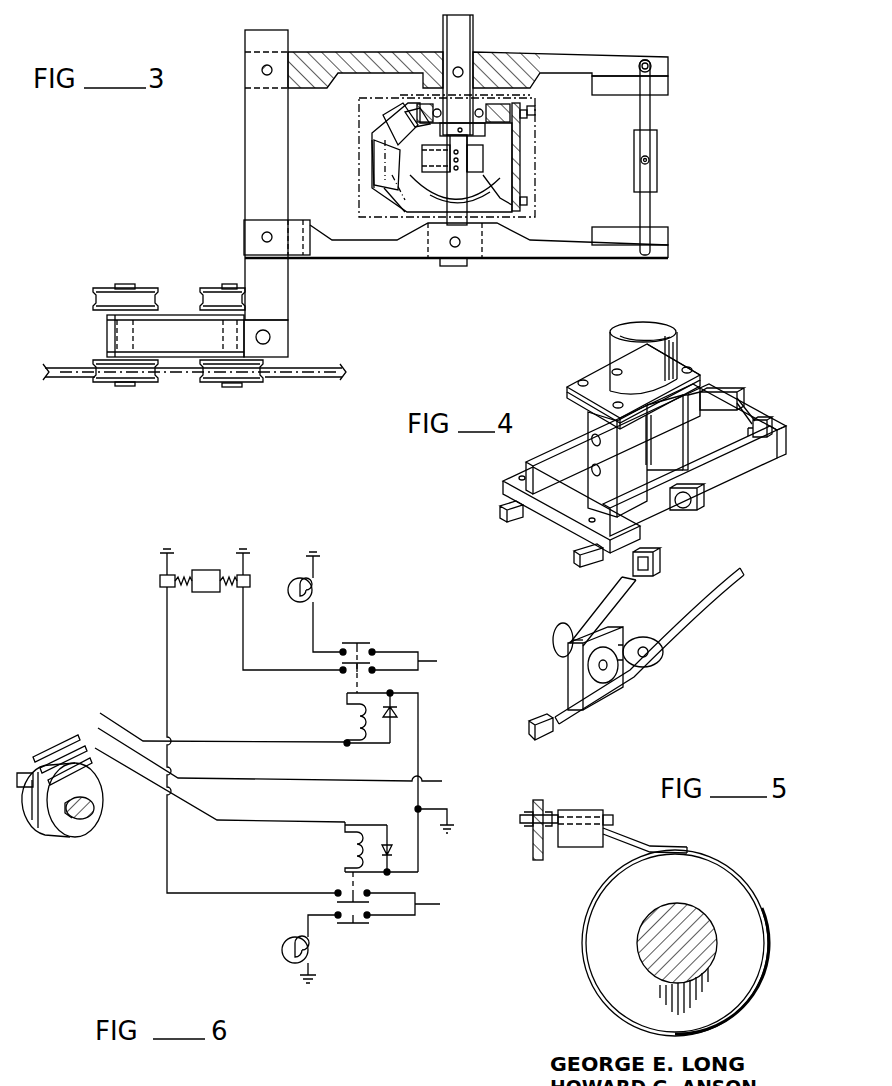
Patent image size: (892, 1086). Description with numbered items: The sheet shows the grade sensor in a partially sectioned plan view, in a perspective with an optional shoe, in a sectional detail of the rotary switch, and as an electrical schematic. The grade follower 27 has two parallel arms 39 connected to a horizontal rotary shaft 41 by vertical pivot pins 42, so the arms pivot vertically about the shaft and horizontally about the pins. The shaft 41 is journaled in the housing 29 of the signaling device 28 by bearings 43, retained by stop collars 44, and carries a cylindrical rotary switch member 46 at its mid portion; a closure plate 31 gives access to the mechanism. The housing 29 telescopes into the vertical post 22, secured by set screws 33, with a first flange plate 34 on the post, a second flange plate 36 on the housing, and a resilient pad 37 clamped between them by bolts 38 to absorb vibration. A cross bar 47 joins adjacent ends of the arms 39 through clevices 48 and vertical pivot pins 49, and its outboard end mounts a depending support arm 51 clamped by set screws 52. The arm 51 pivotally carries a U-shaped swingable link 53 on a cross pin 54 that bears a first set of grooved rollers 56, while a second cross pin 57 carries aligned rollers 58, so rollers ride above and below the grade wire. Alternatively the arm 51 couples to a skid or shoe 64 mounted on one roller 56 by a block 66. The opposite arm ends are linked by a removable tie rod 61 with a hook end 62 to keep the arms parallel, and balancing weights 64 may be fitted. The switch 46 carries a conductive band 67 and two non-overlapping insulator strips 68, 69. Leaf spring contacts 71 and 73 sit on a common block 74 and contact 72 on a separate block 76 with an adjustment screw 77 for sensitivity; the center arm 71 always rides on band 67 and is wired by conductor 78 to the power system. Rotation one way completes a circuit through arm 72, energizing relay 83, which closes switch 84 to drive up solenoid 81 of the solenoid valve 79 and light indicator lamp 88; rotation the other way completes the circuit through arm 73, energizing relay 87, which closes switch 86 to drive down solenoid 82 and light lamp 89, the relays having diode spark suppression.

In FIG. 4, the vertical post 22 is at (657, 332).
In FIG. 3, the grade follower 27 is at (349, 41).
In FIG. 4, the grade follower 27 is at (742, 488).
In FIG. 4, the signaling device 28 is at (697, 435).
In FIG. 3, the housing 29 is at (390, 113).
In FIG. 4, the housing 29 is at (681, 459).
In FIG. 3, the closure plate 31 is at (533, 113).
In FIG. 4, the closure plate 31 is at (683, 413).
In FIG. 4, the set screws 33 is at (613, 352).
In FIG. 4, the first flange plate 34 is at (603, 367).
In FIG. 4, the second flange plate 36 is at (568, 397).
In FIG. 4, the pad of resilient material 37 is at (700, 387).
In FIG. 4, the bolts 38 is at (613, 405).
In FIG. 3, the parallel arms 39 is at (577, 63).
In FIG. 4, the parallel arms 39 is at (565, 453).
In FIG. 3, the horizontal rotary shaft 41 is at (450, 53).
In FIG. 4, the horizontal rotary shaft 41 is at (693, 508).
In FIG. 5, the horizontal rotary shaft 41 is at (707, 925).
In FIG. 6, the horizontal rotary shaft 41 is at (96, 813).
In FIG. 3, the vertical pivot pins 42 is at (463, 68).
In FIG. 3, the bearings 43 is at (490, 98).
In FIG. 3, the stop collars 44 is at (472, 128).
In FIG. 3, the rotary switch member 46 is at (517, 143).
In FIG. 5, the rotary switch member 46 is at (762, 958).
In FIG. 3, the cross bar 47 is at (252, 188).
In FIG. 3, the clevices 48 is at (293, 227).
In FIG. 4, the clevices 48 is at (528, 472).
In FIG. 3, the vertical pivot pins 49 is at (267, 77).
In FIG. 4, the vertical pivot pins 49 is at (518, 477).
In FIG. 3, the depending support arm 51 is at (170, 315).
In FIG. 4, the depending support arm 51 is at (618, 593).
In FIG. 3, the set screws 52 is at (272, 330).
In FIG. 4, the set screws 52 is at (645, 548).
In FIG. 3, the swingable link 53 is at (192, 313).
In FIG. 3, the cross pin 54 is at (127, 284).
In FIG. 3, the first set of grooved rollers 56 is at (105, 288).
In FIG. 4, the first set of grooved rollers 56 is at (562, 628).
In FIG. 3, the second cross pin 57 is at (232, 387).
In FIG. 4, the second cross pin 57 is at (648, 650).
In FIG. 3, the second set of grooved rollers 58 is at (215, 288).
In FIG. 4, the second set of grooved rollers 58 is at (645, 633).
In FIG. 3, the tie rod 61 is at (650, 125).
In FIG. 4, the tie rod 61 is at (748, 413).
In FIG. 4, the hook end 62 is at (770, 424).
In FIG. 3, the weights 64 is at (660, 90).
In FIG. 4, the weights 64 is at (730, 389).
In FIG. 4, the block 66 is at (572, 690).
In FIG. 3, the band of electrically conductive material 67 is at (480, 167).
In FIG. 5, the band of electrically conductive material 67 is at (735, 876).
In FIG. 3, the first arcuate insulator strip 68 is at (493, 183).
In FIG. 6, the first arcuate insulator strip 68 is at (54, 815).
In FIG. 6, the second insulator strip 69 is at (58, 753).
In FIG. 3, the center leaf spring switch contact 71 is at (397, 187).
In FIG. 6, the center leaf spring switch contact 71 is at (77, 740).
In FIG. 3, the adjustable contact arm 72 is at (403, 192).
In FIG. 5, the adjustable contact arm 72 is at (641, 840).
In FIG. 6, the adjustable contact arm 72 is at (65, 742).
In FIG. 3, the leaf spring switch contact 73 is at (412, 110).
In FIG. 6, the leaf spring switch contact 73 is at (93, 762).
In FIG. 3, the common block 74 is at (370, 123).
In FIG. 5, the separate block 76 is at (575, 847).
In FIG. 5, the adjustment screw means 77 is at (608, 814).
In FIG. 6, the conductor 78 is at (262, 780).
In FIG. 6, the solenoid operated valve 79 is at (201, 570).
In FIG. 6, the up solenoid 81 is at (252, 583).
In FIG. 6, the down solenoid 82 is at (160, 582).
In FIG. 6, the relay 83 is at (350, 717).
In FIG. 6, the double pole throw switch 84 is at (342, 656).
In FIG. 6, the double pole double throw switch 86 is at (337, 902).
In FIG. 6, the relay 87 is at (348, 852).
In FIG. 4, the indicator lamp 88 is at (601, 440).
In FIG. 6, the indicator lamp 88 is at (295, 577).
In FIG. 4, the indicator lamp 89 is at (601, 470).
In FIG. 6, the indicator lamp 89 is at (285, 952).